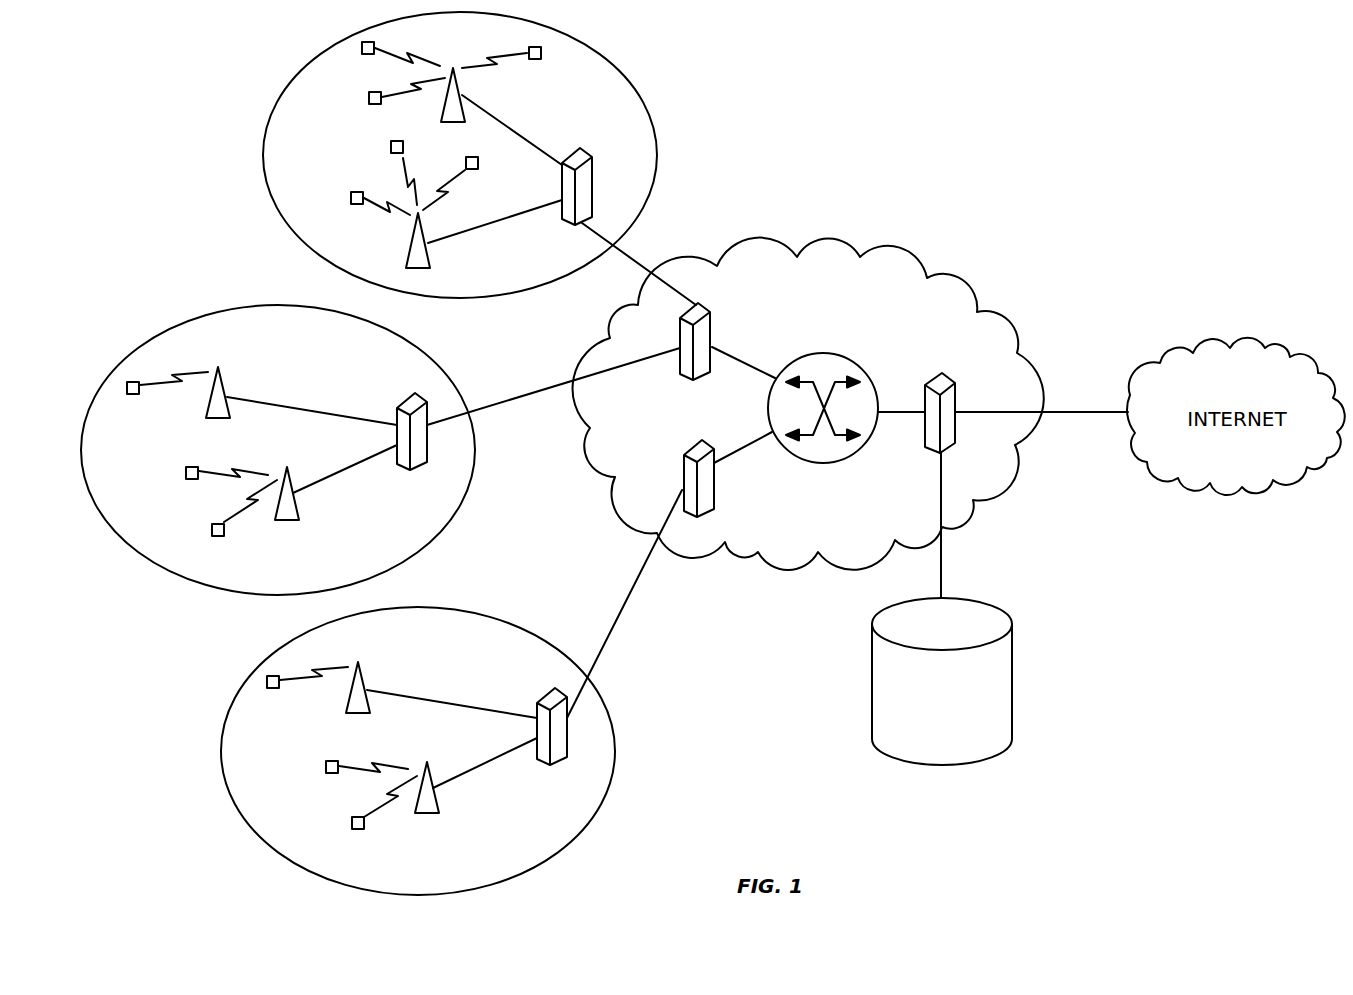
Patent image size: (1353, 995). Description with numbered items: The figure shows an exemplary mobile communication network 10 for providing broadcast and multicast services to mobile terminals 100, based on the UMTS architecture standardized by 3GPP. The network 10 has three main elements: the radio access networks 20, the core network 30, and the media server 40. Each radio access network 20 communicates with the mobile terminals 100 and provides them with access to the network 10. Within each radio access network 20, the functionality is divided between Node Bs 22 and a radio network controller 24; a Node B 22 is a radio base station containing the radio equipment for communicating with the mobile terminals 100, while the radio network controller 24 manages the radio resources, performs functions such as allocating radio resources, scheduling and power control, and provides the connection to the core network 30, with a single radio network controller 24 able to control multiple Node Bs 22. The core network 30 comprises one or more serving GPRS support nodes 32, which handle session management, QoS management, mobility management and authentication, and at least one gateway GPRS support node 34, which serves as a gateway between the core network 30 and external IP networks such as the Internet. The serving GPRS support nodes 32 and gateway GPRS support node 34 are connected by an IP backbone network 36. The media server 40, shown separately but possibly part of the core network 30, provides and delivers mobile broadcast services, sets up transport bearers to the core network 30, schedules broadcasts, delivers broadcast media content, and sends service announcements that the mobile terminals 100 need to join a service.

The network 10 is at (1140, 174).
The radio access network (RAN) 20 is at (482, 661).
The Node B 22 is at (455, 123).
The radio network controller (RNC) 24 is at (567, 226).
The core network 30 is at (856, 294).
The serving GPRS support node (SGSN) 32 is at (711, 340).
The gateway GPRS support node (GGSN) 34 is at (951, 395).
The IP backbone network 36 is at (820, 463).
The media server 40 is at (929, 748).
The mobile terminal 100 is at (369, 56).